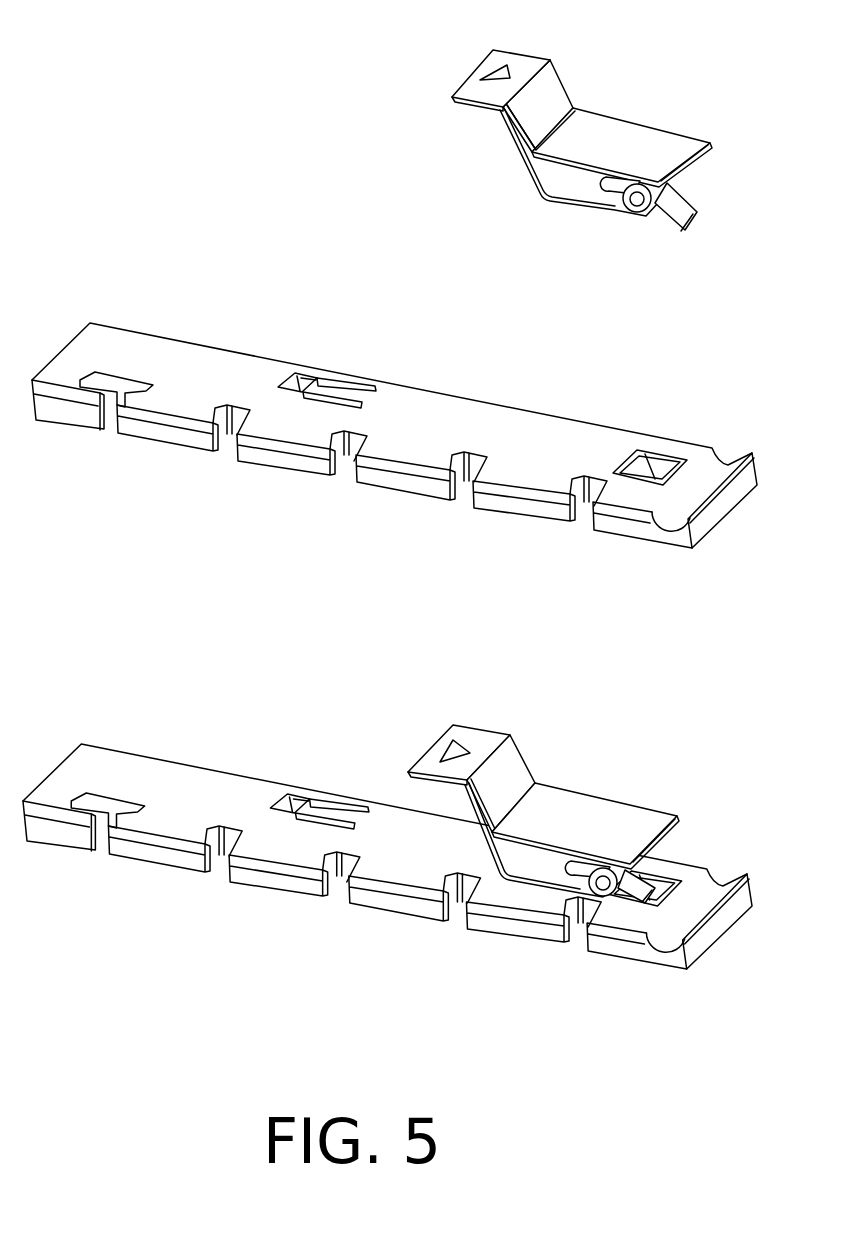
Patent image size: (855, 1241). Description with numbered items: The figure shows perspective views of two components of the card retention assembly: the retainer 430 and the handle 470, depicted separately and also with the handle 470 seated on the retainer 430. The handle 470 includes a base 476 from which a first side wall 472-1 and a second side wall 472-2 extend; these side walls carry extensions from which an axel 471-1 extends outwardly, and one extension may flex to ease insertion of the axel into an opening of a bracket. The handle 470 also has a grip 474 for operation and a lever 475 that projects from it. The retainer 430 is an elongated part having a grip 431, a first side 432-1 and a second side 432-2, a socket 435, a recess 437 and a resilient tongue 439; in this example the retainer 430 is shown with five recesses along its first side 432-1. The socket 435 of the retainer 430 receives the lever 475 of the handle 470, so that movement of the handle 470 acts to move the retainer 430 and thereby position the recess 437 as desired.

The retainer 430 is at (180, 365).
The grip 431 is at (673, 523).
The first side 432-1 is at (446, 538).
The second side 432-2 is at (490, 378).
The socket 435 is at (648, 470).
The recess 437 is at (333, 473).
The resilient tongue 439 is at (335, 390).
The handle 470 is at (588, 127).
The axel 471-1 is at (627, 207).
The first side wall 472-1 is at (508, 198).
The second side wall 472-2 is at (603, 46).
The grip 474 is at (473, 88).
The lever 475 is at (695, 222).
The base 476 is at (650, 137).